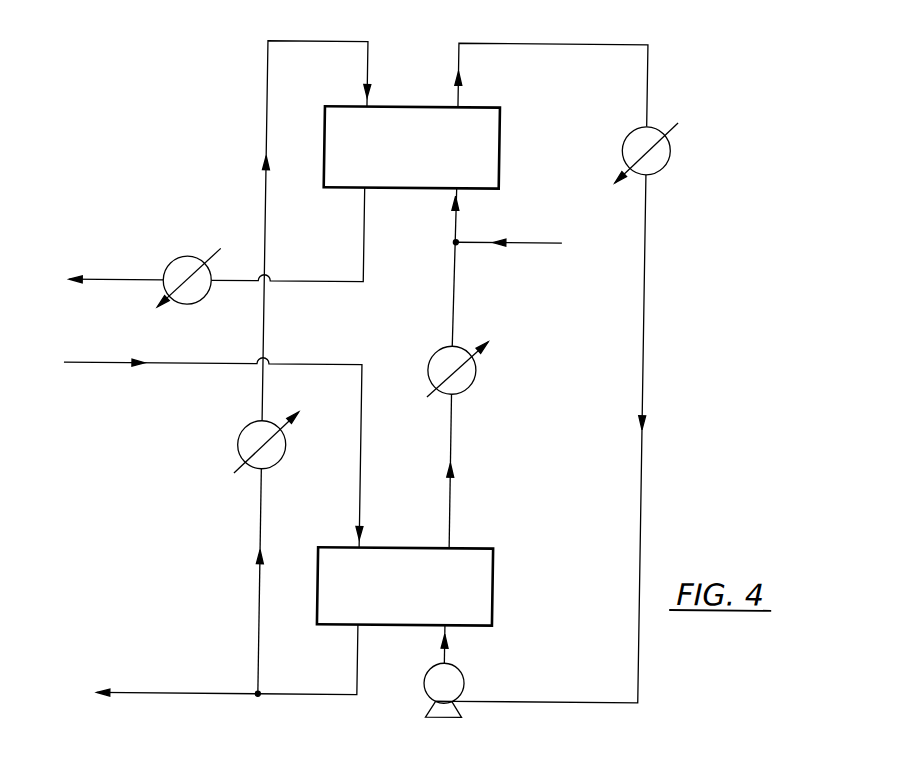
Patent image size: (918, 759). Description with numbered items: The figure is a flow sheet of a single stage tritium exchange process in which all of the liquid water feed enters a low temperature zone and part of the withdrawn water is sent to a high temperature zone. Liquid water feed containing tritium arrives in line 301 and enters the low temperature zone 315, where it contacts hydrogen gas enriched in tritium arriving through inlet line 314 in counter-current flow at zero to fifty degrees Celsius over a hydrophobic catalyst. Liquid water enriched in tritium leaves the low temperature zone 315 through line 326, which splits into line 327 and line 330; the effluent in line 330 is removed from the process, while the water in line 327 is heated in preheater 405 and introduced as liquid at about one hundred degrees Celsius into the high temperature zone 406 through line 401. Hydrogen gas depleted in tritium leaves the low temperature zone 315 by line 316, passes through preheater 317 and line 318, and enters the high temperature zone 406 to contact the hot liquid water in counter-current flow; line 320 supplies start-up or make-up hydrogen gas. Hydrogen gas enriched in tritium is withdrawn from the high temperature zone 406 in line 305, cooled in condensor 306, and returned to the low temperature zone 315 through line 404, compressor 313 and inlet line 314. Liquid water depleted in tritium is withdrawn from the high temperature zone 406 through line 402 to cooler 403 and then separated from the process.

The line 301 is at (210, 364).
The line 305 is at (648, 73).
The condensor 306 is at (674, 150).
The compressor 313 is at (474, 681).
The inlet line 314 is at (457, 648).
The low temperature zone 315 is at (501, 598).
The line 316 is at (460, 503).
The preheater 317 is at (482, 376).
The line 318 is at (460, 293).
The line 320 is at (533, 240).
The line 326 is at (367, 676).
The line 327 is at (268, 611).
The line 330 is at (196, 691).
The line 401 is at (268, 395).
The line 402 is at (341, 283).
The cooler 403 is at (185, 257).
The line 404 is at (648, 395).
The preheater 405 is at (257, 471).
The high temperature zone 406 is at (502, 133).